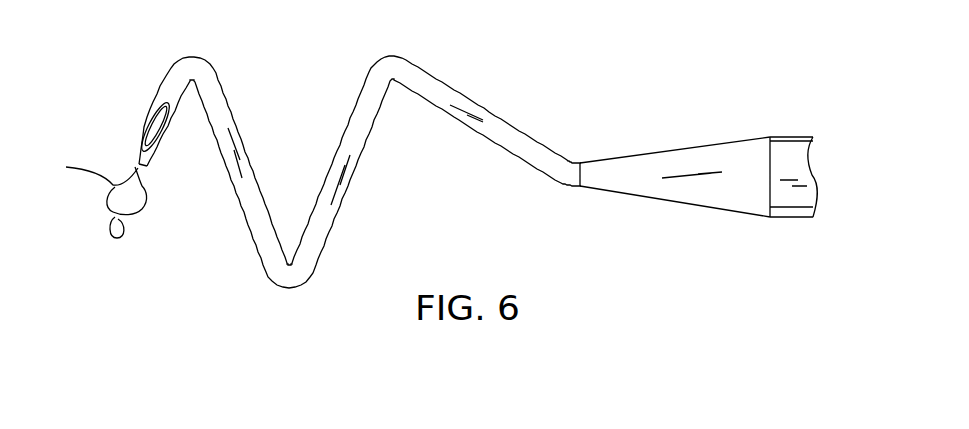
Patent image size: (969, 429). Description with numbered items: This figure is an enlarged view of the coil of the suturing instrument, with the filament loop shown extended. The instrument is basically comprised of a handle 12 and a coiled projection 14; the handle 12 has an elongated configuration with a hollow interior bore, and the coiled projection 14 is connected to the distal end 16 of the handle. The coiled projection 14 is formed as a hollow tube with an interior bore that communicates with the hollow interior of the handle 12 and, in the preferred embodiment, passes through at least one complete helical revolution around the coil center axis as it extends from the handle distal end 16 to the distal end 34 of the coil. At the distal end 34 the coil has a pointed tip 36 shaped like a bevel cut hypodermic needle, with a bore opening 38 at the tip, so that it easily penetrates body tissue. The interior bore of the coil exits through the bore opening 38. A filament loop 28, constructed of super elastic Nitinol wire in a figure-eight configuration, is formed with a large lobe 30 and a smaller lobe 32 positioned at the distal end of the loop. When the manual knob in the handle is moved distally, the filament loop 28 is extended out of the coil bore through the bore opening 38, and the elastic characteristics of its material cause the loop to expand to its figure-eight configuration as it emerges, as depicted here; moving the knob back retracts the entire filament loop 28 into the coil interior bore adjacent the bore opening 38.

The handle 12 is at (787, 155).
The coiled projection 14 is at (377, 77).
The distal end of the handle 16 is at (665, 183).
The filament loop 28 is at (83, 168).
The large lobe 30 is at (108, 210).
The smaller lobe 32 is at (110, 240).
The distal end of the coil 34 is at (167, 148).
The pointed tip 36 is at (146, 168).
The bore opening 38 is at (143, 116).